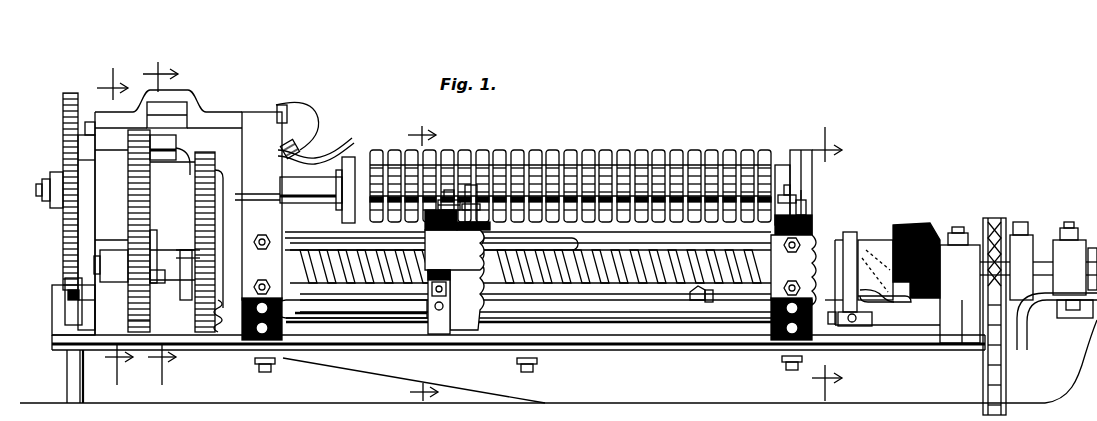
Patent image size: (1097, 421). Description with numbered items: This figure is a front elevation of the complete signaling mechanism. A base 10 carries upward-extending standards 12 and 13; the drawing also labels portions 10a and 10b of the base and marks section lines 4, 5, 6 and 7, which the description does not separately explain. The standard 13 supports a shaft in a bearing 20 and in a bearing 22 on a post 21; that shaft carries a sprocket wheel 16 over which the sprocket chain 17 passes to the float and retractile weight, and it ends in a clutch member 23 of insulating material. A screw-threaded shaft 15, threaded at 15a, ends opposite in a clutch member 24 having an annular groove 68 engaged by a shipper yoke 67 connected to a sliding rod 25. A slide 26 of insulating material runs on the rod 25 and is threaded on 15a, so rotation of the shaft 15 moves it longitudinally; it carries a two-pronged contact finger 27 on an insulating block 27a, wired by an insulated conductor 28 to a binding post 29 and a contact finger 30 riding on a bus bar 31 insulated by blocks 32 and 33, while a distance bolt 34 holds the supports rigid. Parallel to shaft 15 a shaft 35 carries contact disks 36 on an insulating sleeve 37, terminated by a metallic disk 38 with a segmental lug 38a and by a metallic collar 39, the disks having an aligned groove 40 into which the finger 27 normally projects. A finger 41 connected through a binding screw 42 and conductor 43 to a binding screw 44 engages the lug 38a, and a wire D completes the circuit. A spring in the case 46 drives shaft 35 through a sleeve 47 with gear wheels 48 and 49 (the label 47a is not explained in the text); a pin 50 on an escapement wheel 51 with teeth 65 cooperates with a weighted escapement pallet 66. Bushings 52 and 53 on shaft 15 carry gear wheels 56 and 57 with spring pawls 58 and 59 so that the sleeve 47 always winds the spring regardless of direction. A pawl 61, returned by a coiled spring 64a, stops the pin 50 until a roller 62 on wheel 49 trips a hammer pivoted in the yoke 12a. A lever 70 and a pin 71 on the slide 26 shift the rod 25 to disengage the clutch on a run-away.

The base 10 is at (610, 355).
The bottom rail 10a is at (760, 395).
The frame leg 10b is at (67, 382).
The section line 4 is at (115, 221).
The section line 5 is at (160, 218).
The section line 6 is at (423, 261).
The section line 7 is at (827, 260).
The supporting standard 12 is at (272, 216).
The supporting yoke 12a is at (180, 95).
The supporting standard 13 is at (1038, 352).
The shaft 15 is at (643, 284).
The screw threads 15a is at (561, 299).
The sprocket wheel 16 is at (988, 228).
The sprocket chain 17 is at (535, 301).
The bearing 20 is at (1056, 240).
The post 21 is at (958, 330).
The bearing 22 is at (960, 265).
The clutch member 23 is at (913, 233).
The clutch member 24 is at (882, 240).
The sliding rod 25 is at (698, 302).
The slide 26 is at (490, 304).
The contact finger 27 is at (470, 190).
The insulating block 27a is at (456, 231).
The insulated conductor 28 is at (450, 303).
The binding post 29 is at (432, 294).
The contact finger 30 is at (442, 330).
The bus bar 31 is at (740, 322).
The insulating block 32 is at (290, 333).
The insulating block 33 is at (770, 312).
The distance bolt 34 is at (330, 240).
The shaft 35 is at (310, 192).
The contact disks 36 is at (378, 162).
The insulating sleeve 37 is at (352, 318).
The metallic disk 38 is at (781, 165).
The segmental lug 38a is at (861, 149).
The metallic collar 39 is at (349, 160).
The groove 40 is at (602, 172).
The finger 41 is at (812, 190).
The binding screw 42 is at (776, 196).
The insulated conductor 43 is at (793, 287).
The binding screw 44 is at (840, 325).
The case 46 is at (82, 232).
The sleeve 47 is at (145, 223).
The pipe 47a is at (318, 136).
The gear wheel 48 is at (244, 141).
The gear wheel 49 is at (130, 180).
The pin 50 is at (66, 146).
The escapement wheel 51 is at (58, 214).
The bushing 52 is at (180, 250).
The bushing 53 is at (159, 284).
The gear wheel 56 is at (233, 273).
The gear wheel 57 is at (134, 322).
The spring actuated pawl 58 is at (246, 238).
The spring actuated pawl 59 is at (128, 296).
The pawl 61 is at (90, 122).
The roller 62 is at (176, 150).
The coiled spring 64a is at (232, 335).
The teeth 65 is at (64, 271).
The escapement pallet 66 is at (66, 302).
The shipper yoke 67 is at (876, 264).
The annular groove 68 is at (860, 238).
The lever 70 is at (850, 232).
The pin 71 is at (816, 226).
The wire D is at (298, 101).